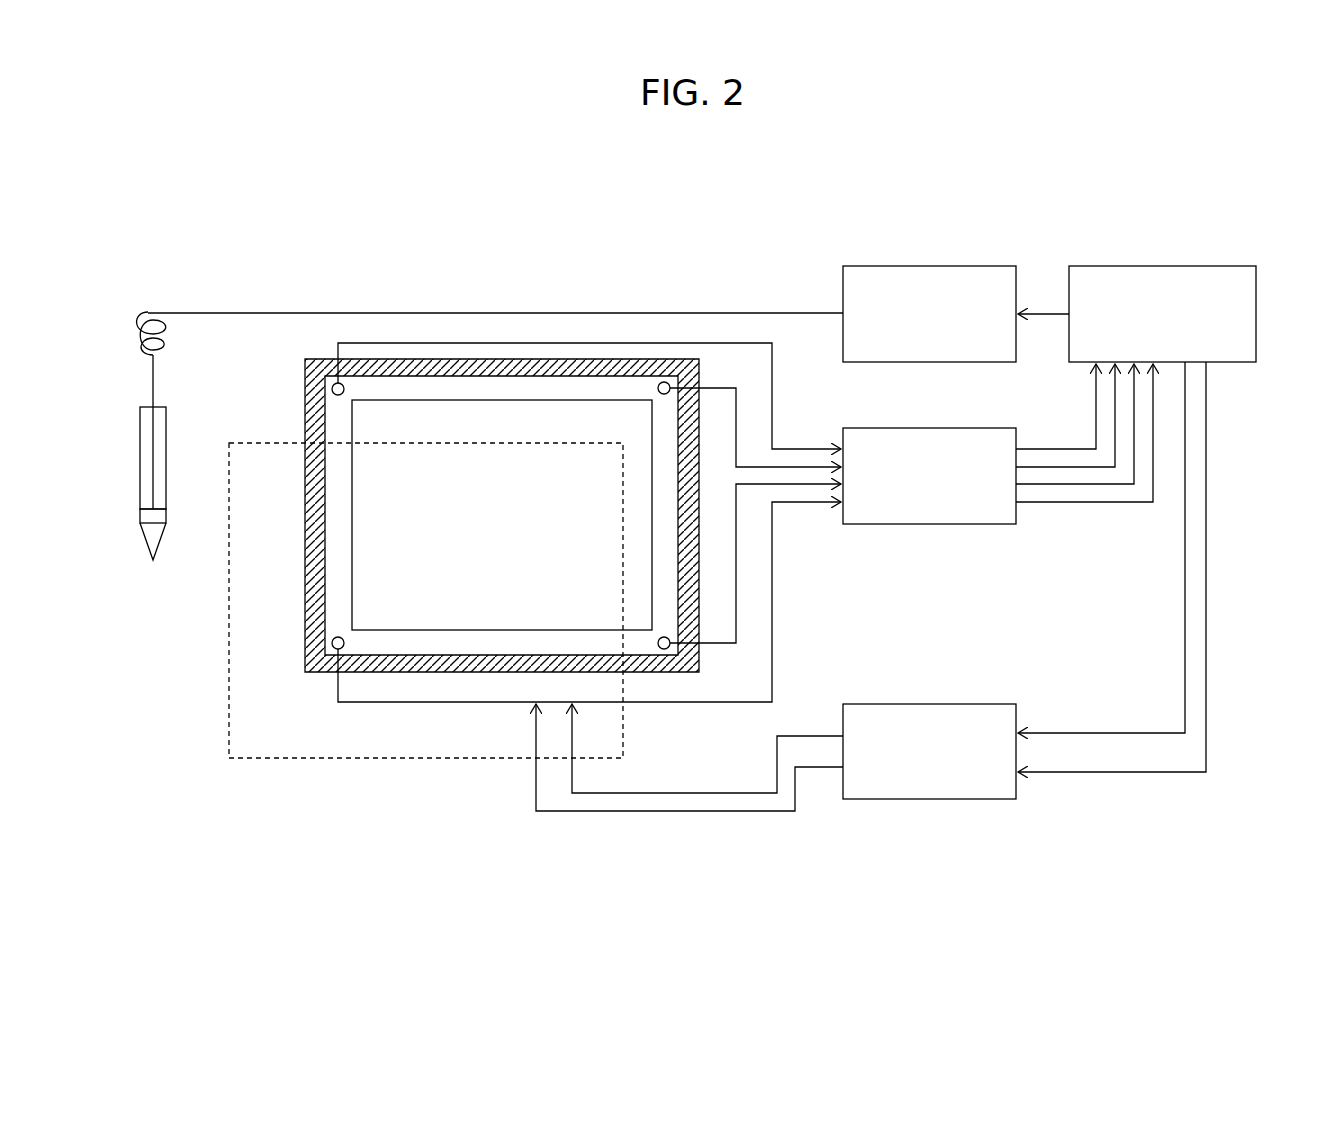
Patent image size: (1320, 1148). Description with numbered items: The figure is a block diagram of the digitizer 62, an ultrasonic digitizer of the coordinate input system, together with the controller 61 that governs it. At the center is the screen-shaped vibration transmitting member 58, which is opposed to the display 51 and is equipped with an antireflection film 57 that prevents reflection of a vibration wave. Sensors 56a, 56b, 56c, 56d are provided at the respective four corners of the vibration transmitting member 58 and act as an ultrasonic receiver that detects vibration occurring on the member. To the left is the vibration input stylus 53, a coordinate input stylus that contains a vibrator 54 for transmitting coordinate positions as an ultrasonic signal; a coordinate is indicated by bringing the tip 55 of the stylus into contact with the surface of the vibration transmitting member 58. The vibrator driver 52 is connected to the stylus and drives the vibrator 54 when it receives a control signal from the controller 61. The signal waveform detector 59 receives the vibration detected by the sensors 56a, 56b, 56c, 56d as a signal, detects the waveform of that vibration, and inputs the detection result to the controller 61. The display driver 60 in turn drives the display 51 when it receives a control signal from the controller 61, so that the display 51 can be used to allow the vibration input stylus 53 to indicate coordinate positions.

The display 51 is at (400, 762).
The vibrator driver 52 is at (958, 266).
The vibration input stylus 53 is at (168, 418).
The vibrator 54 is at (157, 506).
The tip 55 is at (160, 540).
The sensor 56a is at (344, 390).
The sensor 56b is at (658, 390).
The sensor 56c is at (344, 641).
The sensor 56d is at (658, 641).
The antireflection film 57 is at (564, 358).
The vibration transmitting member 58 is at (402, 385).
The signal waveform detector 59 is at (958, 428).
The display driver 60 is at (958, 704).
The controller 61 is at (1204, 266).
The digitizer 62 is at (203, 232).